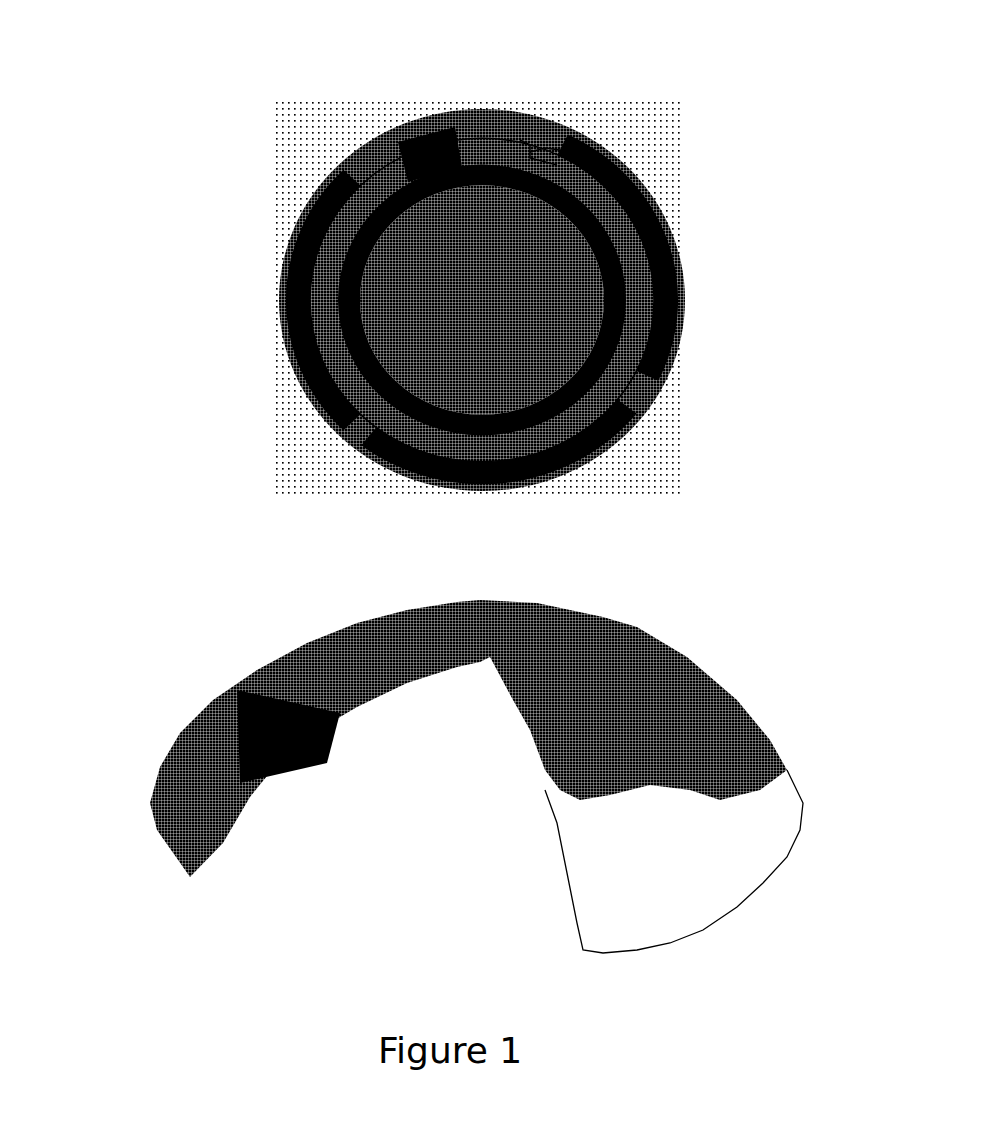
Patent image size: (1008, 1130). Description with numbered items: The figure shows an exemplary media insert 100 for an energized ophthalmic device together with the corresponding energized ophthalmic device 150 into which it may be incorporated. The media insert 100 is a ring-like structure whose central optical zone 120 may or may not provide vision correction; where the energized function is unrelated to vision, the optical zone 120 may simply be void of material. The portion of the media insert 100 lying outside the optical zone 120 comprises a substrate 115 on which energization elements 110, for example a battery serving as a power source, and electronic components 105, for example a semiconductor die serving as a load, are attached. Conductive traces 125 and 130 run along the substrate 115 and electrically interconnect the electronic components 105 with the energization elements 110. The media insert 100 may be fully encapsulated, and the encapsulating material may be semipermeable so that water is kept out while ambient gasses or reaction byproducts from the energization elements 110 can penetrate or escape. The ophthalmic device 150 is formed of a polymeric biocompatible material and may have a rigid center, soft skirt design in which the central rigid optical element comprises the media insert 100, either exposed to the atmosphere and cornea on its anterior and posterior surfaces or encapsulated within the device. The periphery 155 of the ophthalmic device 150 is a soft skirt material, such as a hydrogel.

The media insert 100 is at (178, 70).
The electronic components 105 is at (422, 130).
The energization elements 110 is at (656, 239).
The substrate 115 is at (543, 142).
The optical zone 120 is at (360, 312).
The conductive trace 125 is at (483, 137).
The conductive trace 130 is at (370, 158).
The energized ophthalmic device 150 is at (302, 958).
The periphery 155 is at (712, 843).